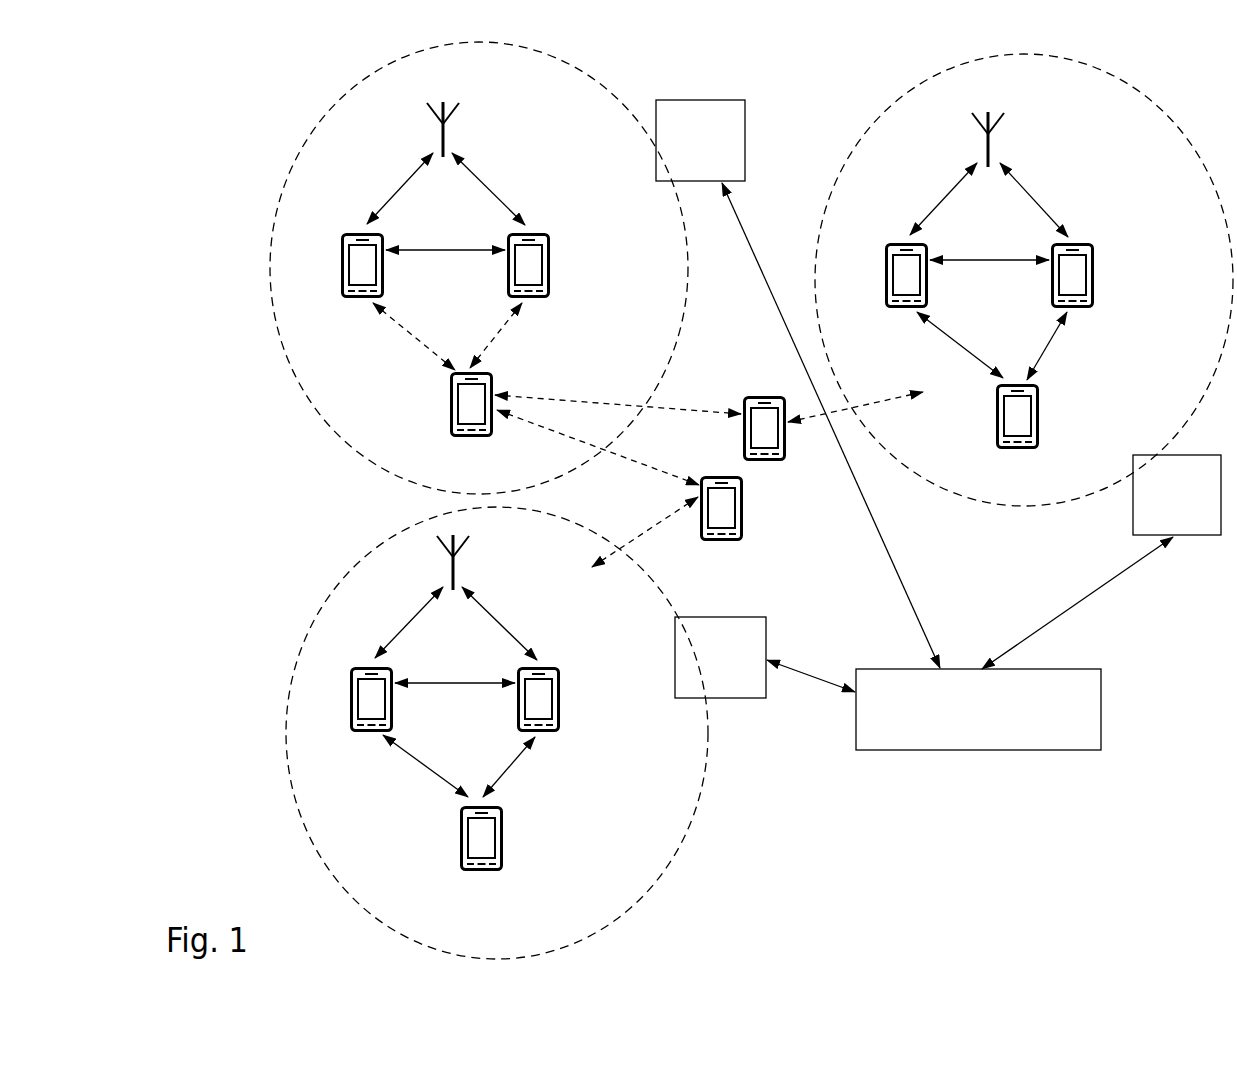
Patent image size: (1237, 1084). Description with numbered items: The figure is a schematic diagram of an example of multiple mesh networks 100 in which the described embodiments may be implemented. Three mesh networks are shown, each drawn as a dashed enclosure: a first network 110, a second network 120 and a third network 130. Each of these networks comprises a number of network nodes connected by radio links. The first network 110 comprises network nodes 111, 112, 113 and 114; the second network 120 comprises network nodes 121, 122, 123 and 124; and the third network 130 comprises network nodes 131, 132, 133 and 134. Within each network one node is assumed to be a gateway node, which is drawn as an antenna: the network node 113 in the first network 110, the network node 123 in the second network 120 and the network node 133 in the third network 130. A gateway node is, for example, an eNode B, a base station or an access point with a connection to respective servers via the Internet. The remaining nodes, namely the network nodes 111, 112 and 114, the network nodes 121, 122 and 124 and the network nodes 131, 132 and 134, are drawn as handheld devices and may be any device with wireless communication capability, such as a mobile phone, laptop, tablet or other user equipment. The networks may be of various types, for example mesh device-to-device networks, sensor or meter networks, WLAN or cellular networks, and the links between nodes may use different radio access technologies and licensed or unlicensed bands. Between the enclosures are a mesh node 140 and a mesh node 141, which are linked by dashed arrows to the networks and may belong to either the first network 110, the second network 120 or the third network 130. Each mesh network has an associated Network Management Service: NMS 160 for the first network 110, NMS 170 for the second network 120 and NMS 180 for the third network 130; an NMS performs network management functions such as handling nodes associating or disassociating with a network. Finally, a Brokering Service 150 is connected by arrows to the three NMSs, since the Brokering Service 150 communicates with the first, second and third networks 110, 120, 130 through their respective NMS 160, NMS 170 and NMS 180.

The multiple mesh networks 100 is at (1170, 798).
The first network 110 is at (607, 149).
The network node 111 is at (493, 430).
The network node 112 is at (384, 280).
The network node 113 is at (445, 130).
The network node 114 is at (548, 280).
The second network 120 is at (1150, 159).
The network node 121 is at (1038, 420).
The network node 122 is at (928, 292).
The network node 123 is at (990, 140).
The network node 124 is at (1093, 282).
The third network 130 is at (650, 790).
The network node 131 is at (503, 840).
The network node 132 is at (393, 715).
The network node 133 is at (455, 565).
The network node 134 is at (559, 693).
The mesh node 140 is at (786, 443).
The mesh node 141 is at (744, 515).
The Brokering Service 150 is at (956, 739).
The Network Management Service 160 is at (678, 172).
The Network Management Service 170 is at (1155, 524).
The Network Management Service 180 is at (698, 688).